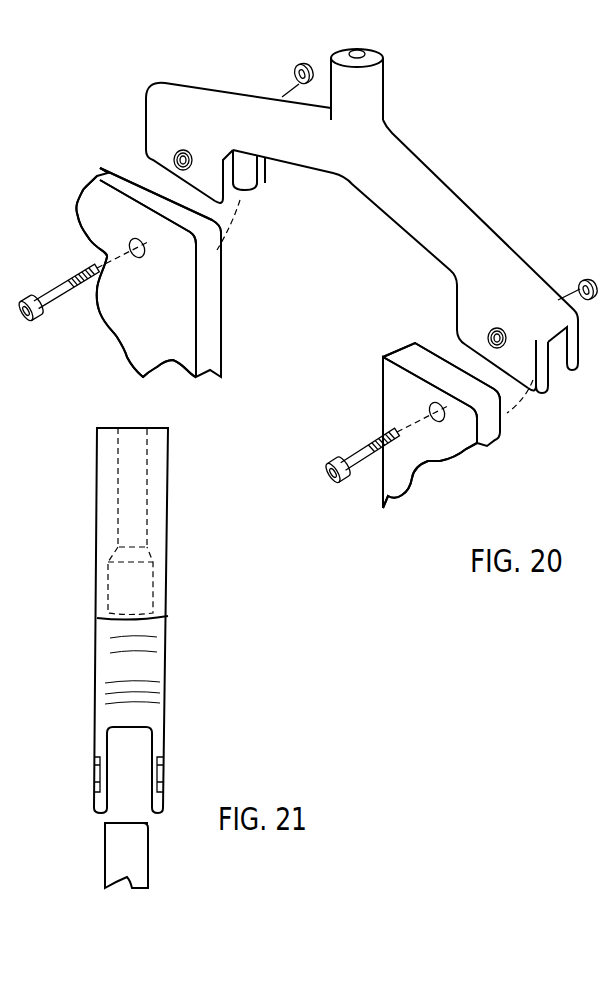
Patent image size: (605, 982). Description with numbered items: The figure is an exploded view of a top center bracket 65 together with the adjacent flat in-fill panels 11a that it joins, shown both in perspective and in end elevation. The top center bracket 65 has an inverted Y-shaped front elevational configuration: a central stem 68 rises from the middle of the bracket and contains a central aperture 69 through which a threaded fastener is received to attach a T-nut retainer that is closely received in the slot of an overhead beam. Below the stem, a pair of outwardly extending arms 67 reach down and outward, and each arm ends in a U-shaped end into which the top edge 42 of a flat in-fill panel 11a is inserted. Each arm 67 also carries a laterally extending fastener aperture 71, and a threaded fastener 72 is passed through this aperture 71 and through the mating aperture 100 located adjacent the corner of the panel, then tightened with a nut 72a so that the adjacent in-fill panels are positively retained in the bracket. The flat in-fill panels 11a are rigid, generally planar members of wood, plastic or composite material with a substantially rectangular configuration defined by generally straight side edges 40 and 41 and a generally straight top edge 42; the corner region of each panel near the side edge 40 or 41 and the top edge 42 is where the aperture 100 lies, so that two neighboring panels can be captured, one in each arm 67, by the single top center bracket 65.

In FIG. 20, the top center bracket 65 is at (344, 226).
In FIG. 21, the top center bracket 65 is at (145, 620).
In FIG. 20, the outwardly extending arms 67 is at (177, 93).
In FIG. 21, the outwardly extending arms 67 is at (160, 660).
In FIG. 20, the central stem 68 is at (391, 82).
In FIG. 21, the central stem 68 is at (90, 521).
In FIG. 20, the central aperture 69 is at (367, 54).
In FIG. 21, the central aperture 69 is at (117, 470).
In FIG. 20, the fastener apertures 71 is at (173, 159).
In FIG. 21, the fastener apertures 71 is at (92, 777).
In FIG. 20, the nuts 72a is at (303, 63).
In FIG. 20, the threaded fasteners 72 is at (57, 290).
In FIG. 20, the top edge 42 is at (117, 177).
In FIG. 21, the top edge 42 is at (120, 822).
In FIG. 20, the side edge 41 is at (213, 337).
In FIG. 20, the side edge 40 is at (393, 410).
In FIG. 20, the mating apertures 100 is at (140, 260).
In FIG. 20, the flat in-fill panels 11a is at (133, 327).
In FIG. 21, the flat in-fill panels 11a is at (143, 868).